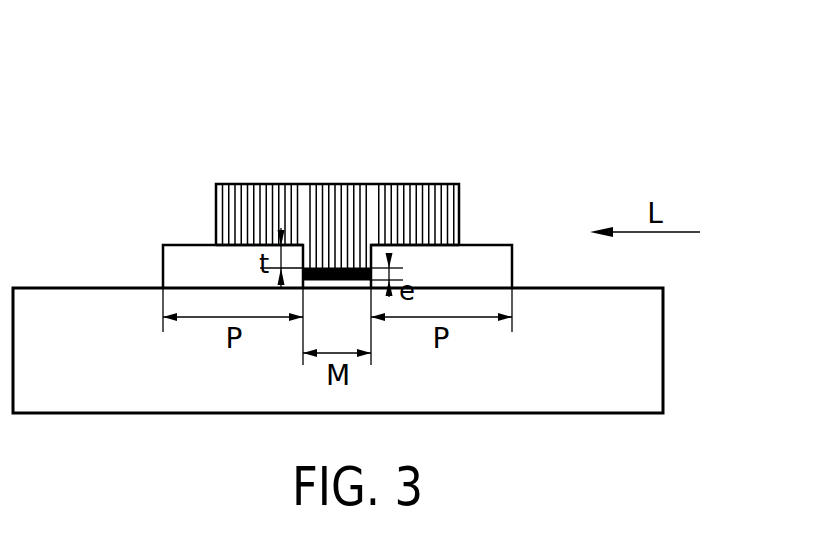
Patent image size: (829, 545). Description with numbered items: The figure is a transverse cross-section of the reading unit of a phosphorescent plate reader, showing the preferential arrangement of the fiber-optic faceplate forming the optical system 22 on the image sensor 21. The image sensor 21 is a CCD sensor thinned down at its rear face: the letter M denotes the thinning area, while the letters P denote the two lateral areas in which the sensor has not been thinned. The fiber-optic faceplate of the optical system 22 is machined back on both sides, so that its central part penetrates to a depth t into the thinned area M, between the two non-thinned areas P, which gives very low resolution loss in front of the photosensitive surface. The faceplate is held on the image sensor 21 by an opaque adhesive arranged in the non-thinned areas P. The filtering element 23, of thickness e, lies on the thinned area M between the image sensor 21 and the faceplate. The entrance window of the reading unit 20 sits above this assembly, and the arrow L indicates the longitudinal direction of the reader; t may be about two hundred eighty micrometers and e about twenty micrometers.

The entrance window of the reading unit 20 is at (343, 190).
The image sensor 21 is at (648, 358).
The optical system 22 is at (432, 215).
The filtering element 23 is at (335, 270).